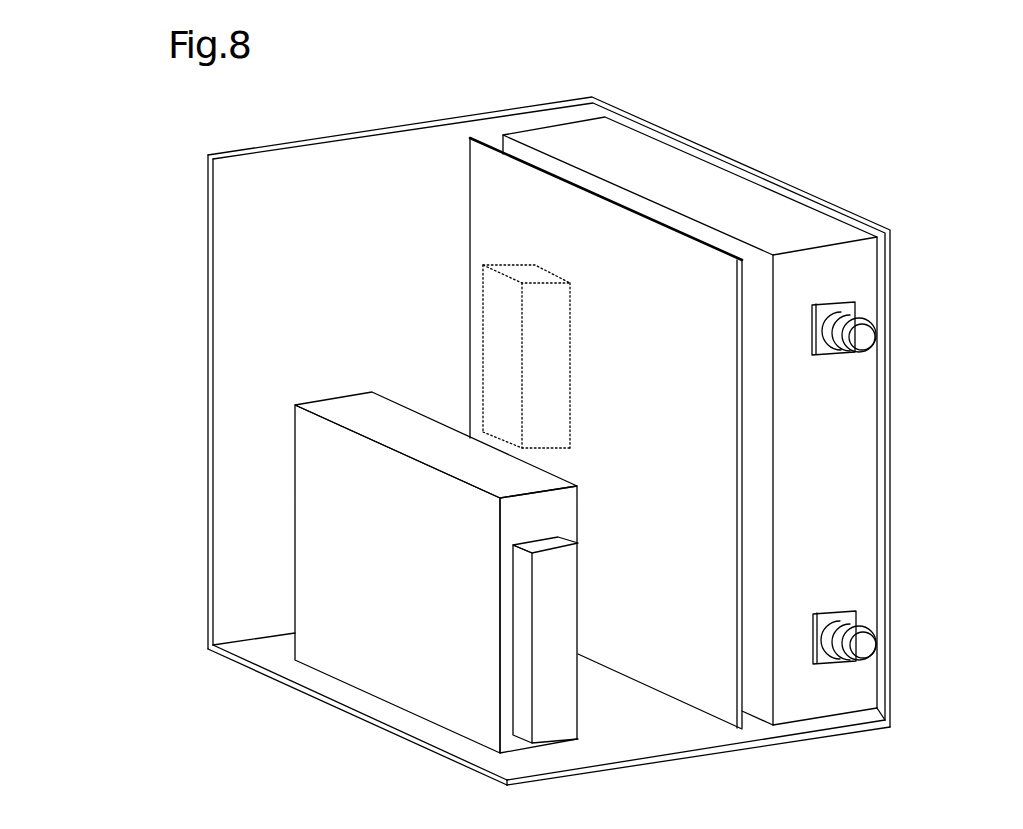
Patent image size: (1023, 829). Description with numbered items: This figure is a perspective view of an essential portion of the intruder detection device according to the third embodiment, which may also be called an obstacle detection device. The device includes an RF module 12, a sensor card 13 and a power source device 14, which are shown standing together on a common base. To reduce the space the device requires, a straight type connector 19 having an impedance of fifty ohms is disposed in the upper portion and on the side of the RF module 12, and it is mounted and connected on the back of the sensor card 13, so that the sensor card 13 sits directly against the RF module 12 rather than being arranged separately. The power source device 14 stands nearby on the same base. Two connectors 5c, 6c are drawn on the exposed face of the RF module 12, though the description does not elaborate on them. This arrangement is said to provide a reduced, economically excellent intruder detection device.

The RF module 12 is at (808, 212).
The sensor card 13 is at (600, 197).
The power source device 14 is at (323, 655).
The straight type connector 19 is at (495, 302).
The connector 5c is at (864, 340).
The connector 6c is at (866, 642).